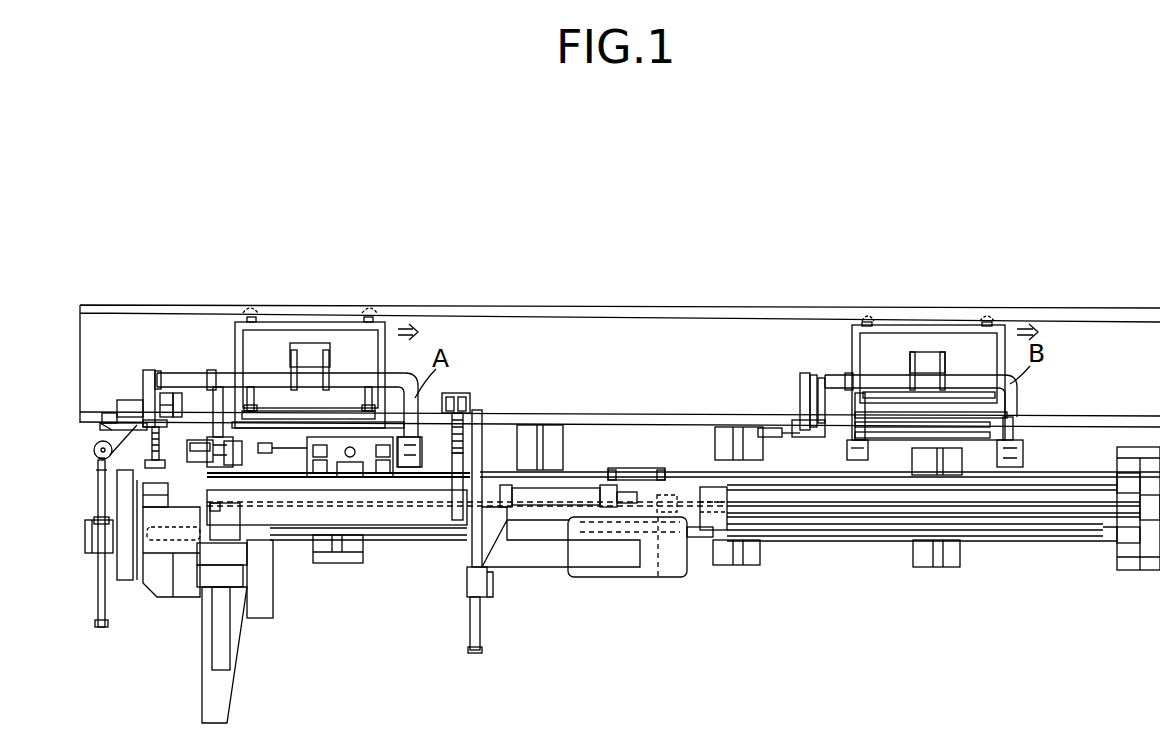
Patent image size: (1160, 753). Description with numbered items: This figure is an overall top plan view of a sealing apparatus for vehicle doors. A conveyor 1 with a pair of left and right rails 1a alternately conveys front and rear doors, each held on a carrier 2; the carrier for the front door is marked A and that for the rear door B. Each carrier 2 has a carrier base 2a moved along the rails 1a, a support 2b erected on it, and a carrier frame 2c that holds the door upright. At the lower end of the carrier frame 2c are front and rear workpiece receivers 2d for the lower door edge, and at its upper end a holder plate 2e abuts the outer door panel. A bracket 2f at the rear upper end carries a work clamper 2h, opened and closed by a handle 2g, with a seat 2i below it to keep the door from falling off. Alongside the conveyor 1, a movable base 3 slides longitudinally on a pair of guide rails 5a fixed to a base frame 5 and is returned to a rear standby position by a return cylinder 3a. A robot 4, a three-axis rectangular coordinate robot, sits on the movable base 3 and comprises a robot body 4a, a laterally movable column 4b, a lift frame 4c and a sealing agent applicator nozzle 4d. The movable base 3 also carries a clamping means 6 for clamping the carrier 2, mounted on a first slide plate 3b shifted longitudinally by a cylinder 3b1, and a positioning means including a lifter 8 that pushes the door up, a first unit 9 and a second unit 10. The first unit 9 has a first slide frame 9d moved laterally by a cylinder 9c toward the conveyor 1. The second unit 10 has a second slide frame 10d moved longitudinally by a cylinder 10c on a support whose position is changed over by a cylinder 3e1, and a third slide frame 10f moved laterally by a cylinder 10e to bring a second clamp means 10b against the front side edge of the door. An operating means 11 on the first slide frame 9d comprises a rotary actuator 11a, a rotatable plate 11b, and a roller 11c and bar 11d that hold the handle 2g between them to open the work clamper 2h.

The conveyor 1 is at (603, 304).
The rails 1a is at (627, 312).
The carrier 2 is at (417, 360).
The carrier base 2a is at (317, 322).
The support 2b is at (308, 352).
The carrier frame 2c is at (360, 378).
The workpiece receivers 2d is at (222, 412).
The holder plate 2e is at (280, 417).
The bracket 2f is at (147, 376).
The handle 2g is at (95, 448).
The work clamper 2h is at (181, 417).
The seat 2i is at (817, 407).
The movable base 3 is at (398, 515).
The return cylinder 3a is at (863, 505).
The first slide plate 3b is at (252, 504).
The cylinder 3b1 is at (320, 490).
The cylinder 3e1 is at (578, 493).
The robot 4 is at (161, 604).
The robot body 4a is at (240, 553).
The column 4b is at (227, 578).
The lift frame 4c is at (185, 583).
The sealing agent applicator nozzle 4d is at (162, 480).
The base frame 5 is at (1112, 543).
The guide rails 5a is at (800, 478).
The clamping means 6 is at (202, 430).
The lifter 8 is at (383, 437).
The first unit 9 is at (168, 397).
The cylinder 9c is at (100, 570).
The first slide frame 9d is at (122, 560).
The second unit 10 is at (475, 404).
The second clamp means 10b is at (445, 417).
The cylinder 10c is at (658, 577).
The second slide frame 10d is at (508, 555).
The cylinder 10e is at (480, 617).
The third slide frame 10f is at (458, 493).
The operating means 11 is at (112, 417).
The rotary actuator 11a is at (130, 417).
The rotatable plate 11b is at (97, 474).
The roller 11c is at (98, 457).
The bar 11d is at (112, 424).